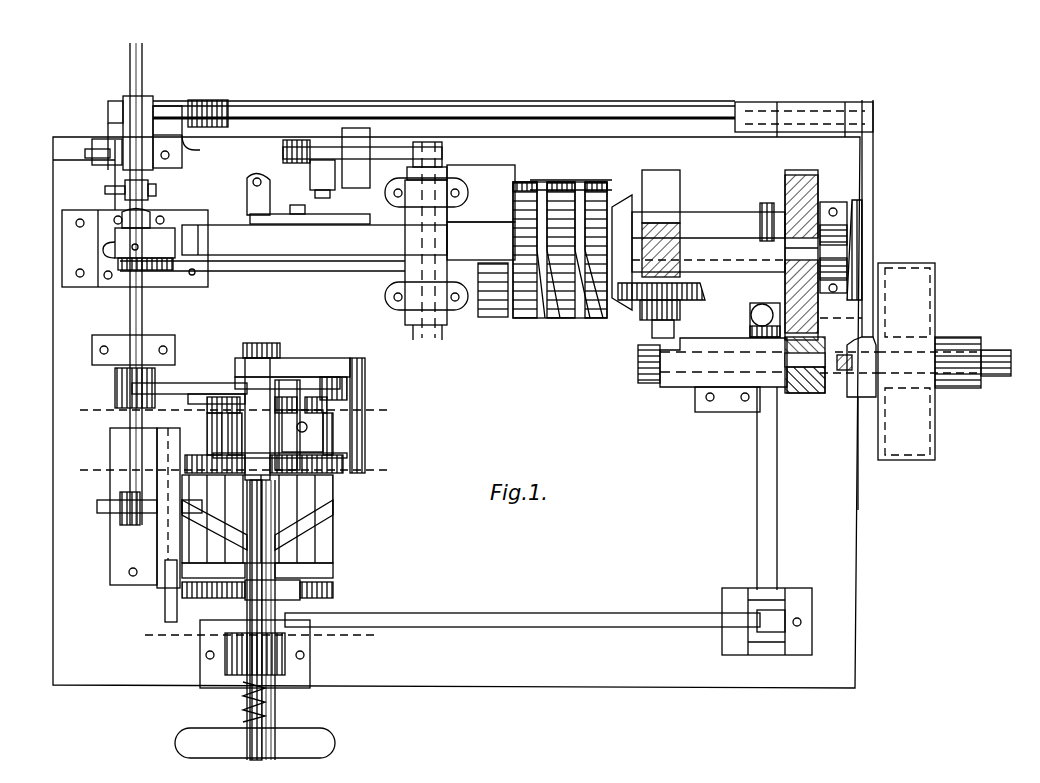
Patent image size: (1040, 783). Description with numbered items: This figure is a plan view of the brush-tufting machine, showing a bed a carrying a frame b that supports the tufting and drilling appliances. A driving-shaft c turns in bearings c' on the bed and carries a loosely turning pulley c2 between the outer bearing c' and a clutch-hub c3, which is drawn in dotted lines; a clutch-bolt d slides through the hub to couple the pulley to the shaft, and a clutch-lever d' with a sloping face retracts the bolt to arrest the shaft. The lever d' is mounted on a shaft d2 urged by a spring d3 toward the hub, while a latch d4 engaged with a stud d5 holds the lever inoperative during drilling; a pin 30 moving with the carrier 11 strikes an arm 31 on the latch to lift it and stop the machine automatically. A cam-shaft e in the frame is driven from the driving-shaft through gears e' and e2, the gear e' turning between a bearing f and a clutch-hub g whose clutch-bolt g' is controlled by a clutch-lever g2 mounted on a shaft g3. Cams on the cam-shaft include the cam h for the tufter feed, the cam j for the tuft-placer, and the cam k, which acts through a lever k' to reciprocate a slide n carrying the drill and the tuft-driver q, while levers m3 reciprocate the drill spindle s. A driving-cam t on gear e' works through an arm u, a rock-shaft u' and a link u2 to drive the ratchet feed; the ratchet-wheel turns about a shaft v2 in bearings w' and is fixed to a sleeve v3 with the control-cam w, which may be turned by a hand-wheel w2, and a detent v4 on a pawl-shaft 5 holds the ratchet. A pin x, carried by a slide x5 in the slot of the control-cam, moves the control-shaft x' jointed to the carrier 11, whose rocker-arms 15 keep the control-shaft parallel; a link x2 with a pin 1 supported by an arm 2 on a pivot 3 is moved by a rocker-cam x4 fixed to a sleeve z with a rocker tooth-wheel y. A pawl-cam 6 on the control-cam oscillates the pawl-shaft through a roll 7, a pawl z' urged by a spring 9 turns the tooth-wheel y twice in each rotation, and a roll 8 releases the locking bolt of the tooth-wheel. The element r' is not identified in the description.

The bed a is at (456, 412).
The shaft d2 is at (513, 109).
The spring d3 is at (212, 100).
The control-shaft x' is at (113, 284).
The rocker-arms 15 is at (150, 100).
The arm 31 is at (85, 152).
The latch d4 is at (66, 172).
The pin 30 is at (105, 190).
The stud d5 is at (112, 220).
The spindle s is at (115, 238).
The carrier 11 is at (103, 250).
The cam k is at (311, 213).
The levers m3 is at (392, 150).
The frame b is at (660, 168).
The slide n is at (481, 242).
The lever k' is at (493, 314).
The cam-shaft e is at (713, 232).
The shaft g3 is at (625, 180).
The cam j is at (603, 318).
The clutch-hub g is at (693, 229).
The clutch-bolt g' is at (700, 308).
The clutch-lever g2 is at (745, 238).
The gear e' is at (801, 244).
The driving-cam t is at (790, 318).
The bearing f is at (833, 250).
The cam h is at (858, 232).
The clutch-lever d' is at (866, 277).
The clutch-hub c3 is at (863, 410).
The pulley c2 is at (915, 433).
The bearings c' is at (809, 365).
The driving-shaft c is at (996, 347).
The clutch-bolt d is at (929, 366).
The arm u is at (746, 320).
The gear e2 is at (800, 393).
The rock-shaft u' is at (784, 488).
The link u2 is at (548, 621).
The pin x is at (153, 508).
The link x2 is at (188, 383).
The rocker tooth-wheel y is at (205, 404).
The spring 9 is at (232, 411).
The roll 8 is at (233, 472).
The roll 7 is at (285, 475).
The shaft v2 is at (262, 343).
The sleeve z is at (267, 368).
The pawl z' is at (255, 434).
The rocker-cam x4 is at (312, 358).
The pin 1 is at (340, 360).
The arm 2 is at (350, 388).
The pivot 3 is at (365, 437).
The pawl-cam 6 is at (343, 470).
The control-cam w is at (274, 519).
The pawl-shaft 5 is at (247, 549).
The sleeve v3 is at (300, 573).
The detent v4 is at (290, 598).
The collar r' is at (327, 585).
The slide x5 is at (165, 604).
The bearings w' is at (276, 654).
The tuft-driver q is at (265, 703).
The hand-wheel w2 is at (274, 743).